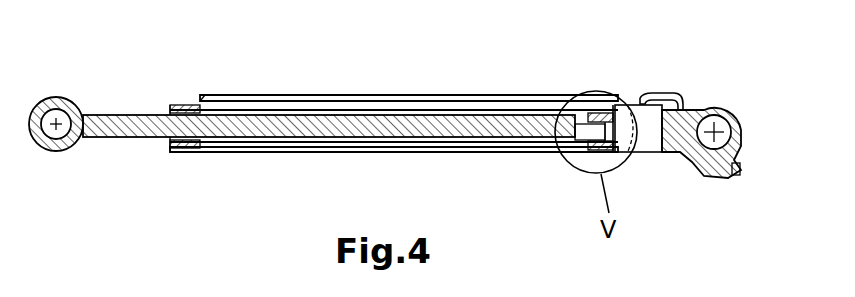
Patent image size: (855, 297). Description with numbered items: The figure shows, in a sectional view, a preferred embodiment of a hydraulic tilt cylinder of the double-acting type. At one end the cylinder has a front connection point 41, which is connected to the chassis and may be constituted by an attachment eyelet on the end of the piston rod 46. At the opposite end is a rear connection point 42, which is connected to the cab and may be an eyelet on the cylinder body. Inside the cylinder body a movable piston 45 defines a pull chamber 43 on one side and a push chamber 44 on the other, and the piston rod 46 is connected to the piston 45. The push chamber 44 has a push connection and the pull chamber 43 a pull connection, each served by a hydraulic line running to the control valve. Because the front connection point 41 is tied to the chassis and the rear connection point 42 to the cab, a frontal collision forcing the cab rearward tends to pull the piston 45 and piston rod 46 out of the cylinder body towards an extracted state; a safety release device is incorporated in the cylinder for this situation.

The front connection point 41 is at (53, 98).
The rear connection point 42 is at (736, 138).
The pull chamber 43 is at (505, 142).
The push chamber 44 is at (642, 125).
The piston 45 is at (605, 118).
The piston rod 46 is at (450, 133).